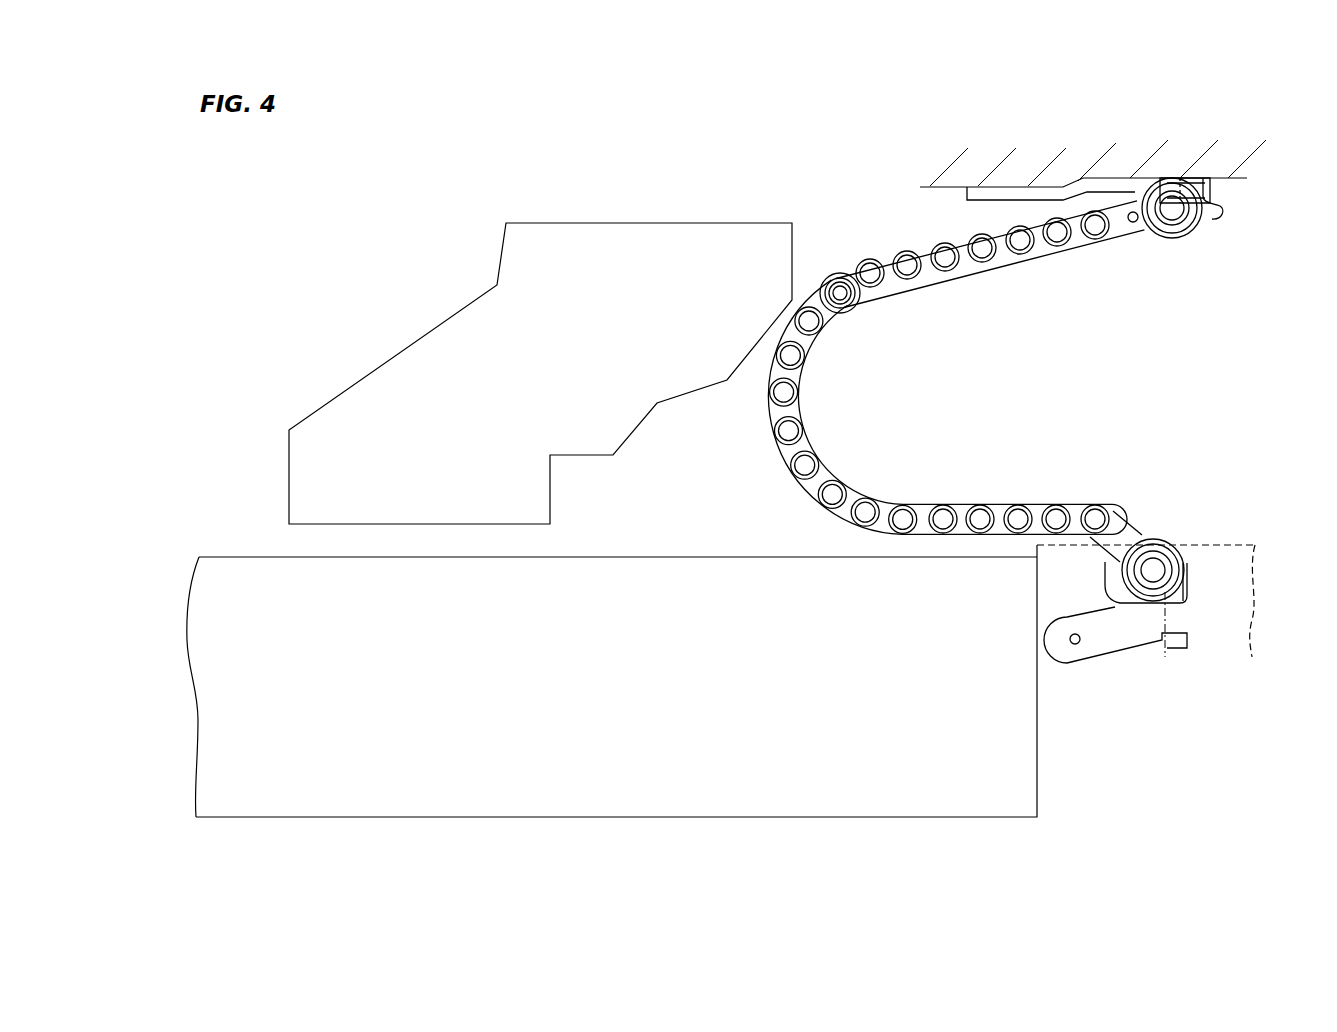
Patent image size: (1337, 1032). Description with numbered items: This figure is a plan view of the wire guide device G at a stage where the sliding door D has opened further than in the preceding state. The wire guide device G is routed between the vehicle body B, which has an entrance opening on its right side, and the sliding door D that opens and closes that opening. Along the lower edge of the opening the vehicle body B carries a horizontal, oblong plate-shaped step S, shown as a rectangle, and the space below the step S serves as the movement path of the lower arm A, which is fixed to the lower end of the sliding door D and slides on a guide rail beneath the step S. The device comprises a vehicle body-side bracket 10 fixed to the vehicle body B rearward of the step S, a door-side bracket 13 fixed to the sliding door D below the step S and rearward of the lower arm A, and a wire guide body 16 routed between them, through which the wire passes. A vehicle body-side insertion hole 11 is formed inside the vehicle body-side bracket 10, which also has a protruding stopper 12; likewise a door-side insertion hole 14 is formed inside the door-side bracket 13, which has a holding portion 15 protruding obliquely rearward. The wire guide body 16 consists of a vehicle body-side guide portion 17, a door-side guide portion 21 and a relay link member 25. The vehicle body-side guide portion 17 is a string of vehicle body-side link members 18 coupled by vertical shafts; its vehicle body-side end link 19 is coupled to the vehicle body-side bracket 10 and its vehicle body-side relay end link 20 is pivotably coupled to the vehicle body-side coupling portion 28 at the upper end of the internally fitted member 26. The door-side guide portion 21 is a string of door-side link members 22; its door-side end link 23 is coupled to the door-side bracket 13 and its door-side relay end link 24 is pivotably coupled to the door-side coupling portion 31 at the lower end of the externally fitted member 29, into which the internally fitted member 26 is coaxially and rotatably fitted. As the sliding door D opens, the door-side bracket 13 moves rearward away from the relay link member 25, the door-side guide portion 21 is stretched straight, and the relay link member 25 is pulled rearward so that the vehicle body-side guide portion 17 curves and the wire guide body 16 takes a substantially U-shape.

The vehicle body-side bracket 10 is at (1160, 541).
The vehicle body-side insertion hole 11 is at (1150, 572).
The stopper 12 is at (1110, 583).
The door-side bracket 13 is at (1150, 196).
The door-side insertion hole 14 is at (1177, 208).
The holding portion 15 is at (1220, 210).
The wire guide body 16 is at (835, 198).
The vehicle body-side guide portion 17 is at (800, 523).
The vehicle body-side link members 18 is at (855, 494).
The vehicle body-side end link 19 is at (1145, 533).
The vehicle body-side relay end link 20 is at (788, 337).
The door-side guide portion 21 is at (1050, 305).
The door-side link members 22 is at (997, 265).
The door-side end link 23 is at (1127, 198).
The door-side relay end link 24 is at (885, 263).
The relay link member 25 is at (880, 326).
The internally fitted member 26 is at (846, 302).
The vehicle body-side coupling portion 28 is at (826, 313).
The externally fitted member 29 is at (838, 288).
The door-side coupling portion 31 is at (866, 300).
The lower arm A is at (386, 361).
The vehicle body B is at (1212, 540).
The sliding door D is at (1247, 178).
The wire guide device G is at (1238, 298).
The step S is at (1038, 757).